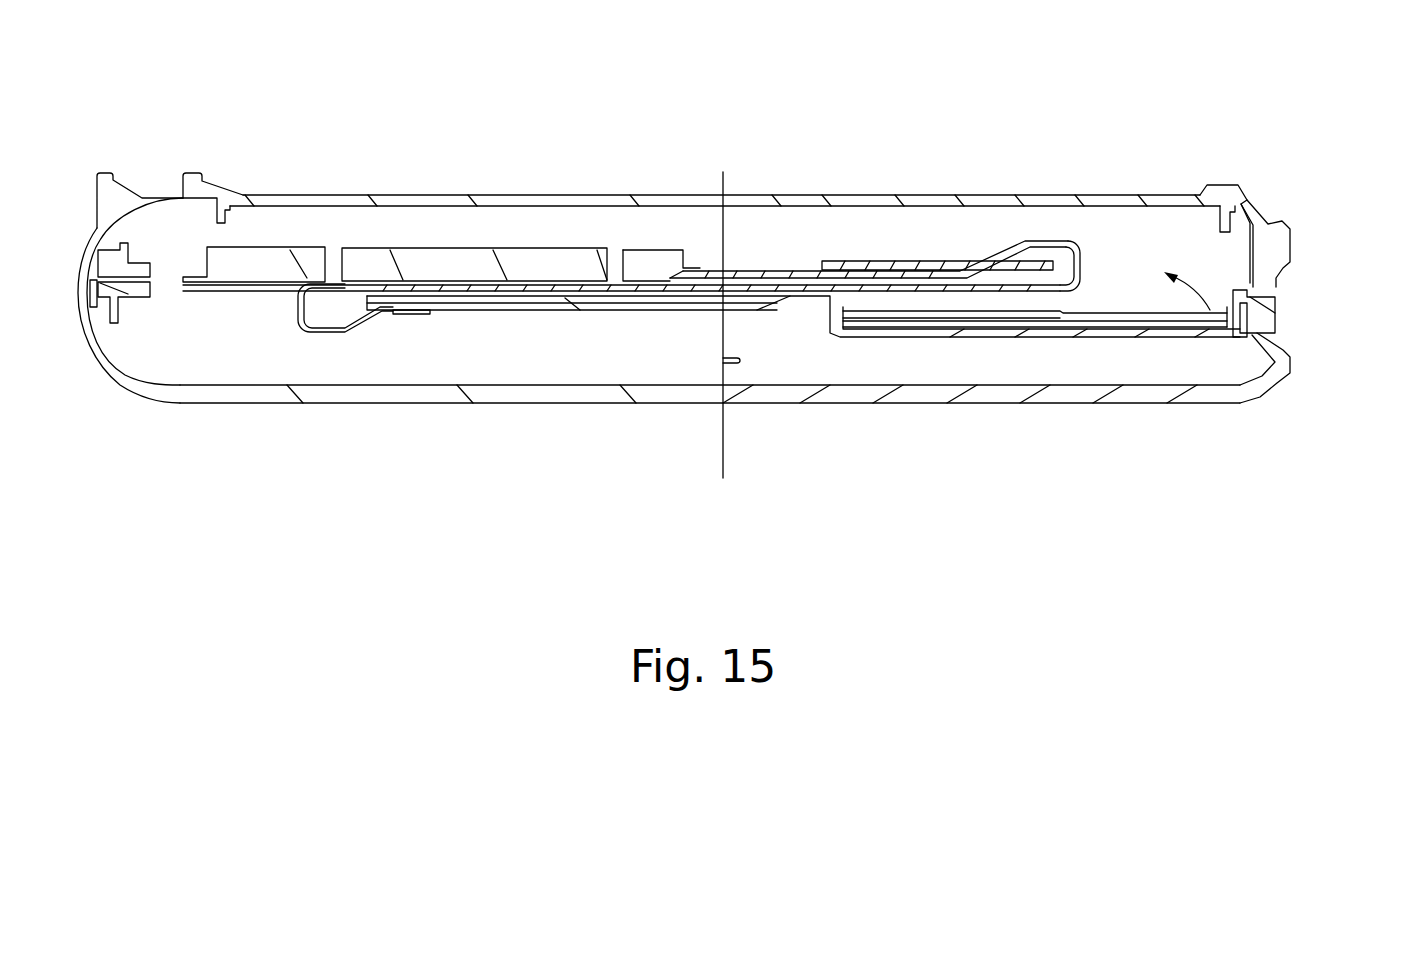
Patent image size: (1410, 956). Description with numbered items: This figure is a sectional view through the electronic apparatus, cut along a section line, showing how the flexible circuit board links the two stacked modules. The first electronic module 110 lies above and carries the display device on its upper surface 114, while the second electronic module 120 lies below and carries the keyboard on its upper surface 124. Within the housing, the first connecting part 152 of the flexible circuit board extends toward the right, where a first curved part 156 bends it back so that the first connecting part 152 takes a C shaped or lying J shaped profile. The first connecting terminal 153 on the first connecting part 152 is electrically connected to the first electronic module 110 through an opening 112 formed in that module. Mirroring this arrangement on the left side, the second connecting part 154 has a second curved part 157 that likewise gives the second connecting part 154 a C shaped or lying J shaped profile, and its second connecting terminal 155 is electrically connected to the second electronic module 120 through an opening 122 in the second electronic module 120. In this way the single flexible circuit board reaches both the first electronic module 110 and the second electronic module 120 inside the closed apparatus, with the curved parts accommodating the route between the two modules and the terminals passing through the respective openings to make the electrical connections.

The first electronic module 110 is at (773, 268).
The opening 112 is at (1227, 317).
The upper surface 114 is at (737, 283).
The second electronic module 120 is at (537, 303).
The opening 122 is at (167, 293).
The upper surface 124 is at (1160, 343).
The first connecting part 152 is at (1017, 292).
The first connecting terminal 153 is at (901, 260).
The second connecting part 154 is at (362, 282).
The second connecting terminal 155 is at (403, 314).
The first curved part 156 is at (1083, 262).
The second curved part 157 is at (297, 310).